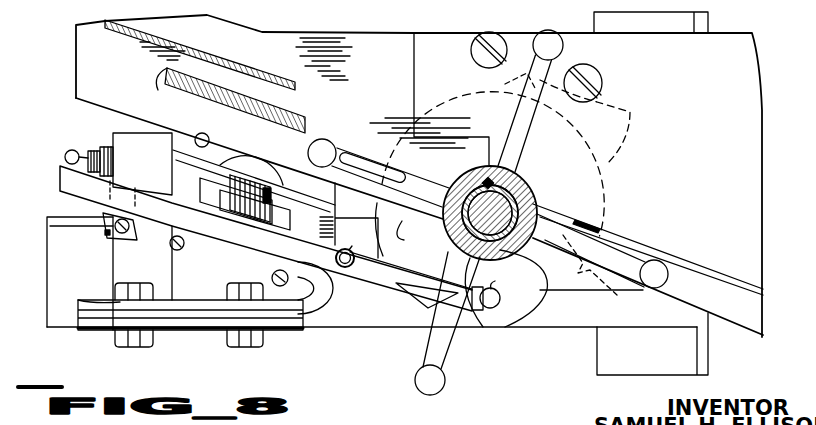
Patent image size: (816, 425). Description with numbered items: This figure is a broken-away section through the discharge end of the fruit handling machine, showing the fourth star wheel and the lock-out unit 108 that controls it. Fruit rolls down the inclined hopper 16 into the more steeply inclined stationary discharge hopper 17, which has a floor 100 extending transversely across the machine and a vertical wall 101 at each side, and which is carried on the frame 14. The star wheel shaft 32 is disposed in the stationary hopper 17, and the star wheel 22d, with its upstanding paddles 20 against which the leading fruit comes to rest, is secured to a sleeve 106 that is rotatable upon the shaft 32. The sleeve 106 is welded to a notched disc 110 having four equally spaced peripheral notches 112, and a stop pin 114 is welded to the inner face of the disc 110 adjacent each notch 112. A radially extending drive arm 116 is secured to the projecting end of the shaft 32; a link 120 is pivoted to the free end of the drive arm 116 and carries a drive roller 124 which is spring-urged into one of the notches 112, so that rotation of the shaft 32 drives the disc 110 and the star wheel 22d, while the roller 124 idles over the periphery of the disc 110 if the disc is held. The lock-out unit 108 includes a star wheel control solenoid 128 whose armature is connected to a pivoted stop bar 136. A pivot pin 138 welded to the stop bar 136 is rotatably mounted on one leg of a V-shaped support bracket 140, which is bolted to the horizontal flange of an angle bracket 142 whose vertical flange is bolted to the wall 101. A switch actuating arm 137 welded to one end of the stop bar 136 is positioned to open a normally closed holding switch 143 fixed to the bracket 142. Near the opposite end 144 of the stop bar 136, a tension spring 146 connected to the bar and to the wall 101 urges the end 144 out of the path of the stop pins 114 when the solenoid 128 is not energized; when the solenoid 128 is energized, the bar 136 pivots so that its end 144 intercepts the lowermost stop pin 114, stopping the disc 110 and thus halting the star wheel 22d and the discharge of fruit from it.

The frame 14 is at (594, 357).
The inclined hopper 16 is at (216, 38).
The stationary discharge hopper 17 is at (380, 33).
The paddle 20 is at (331, 147).
The star wheel 22d is at (515, 182).
The star wheel shaft 32 is at (498, 217).
The floor 100 is at (250, 98).
The vertical wall 101 is at (393, 89).
The sleeve 106 is at (510, 202).
The lock-out unit 108 is at (398, 296).
The notched disc 110 is at (537, 306).
The notch 112 is at (520, 124).
The stop pin 114 is at (452, 256).
The drive arm 116 is at (610, 165).
The link 120 is at (542, 80).
The drive roller 124 is at (528, 77).
The star wheel control solenoid 128 is at (250, 167).
The stop bar 136 is at (98, 180).
The switch actuating arm 137 is at (65, 156).
The pivot pin 138 is at (96, 246).
The support bracket 140 is at (262, 256).
The angle bracket 142 is at (213, 309).
The holding switch 143 is at (157, 163).
The end of the stop bar 144 is at (450, 284).
The tension spring 146 is at (352, 266).